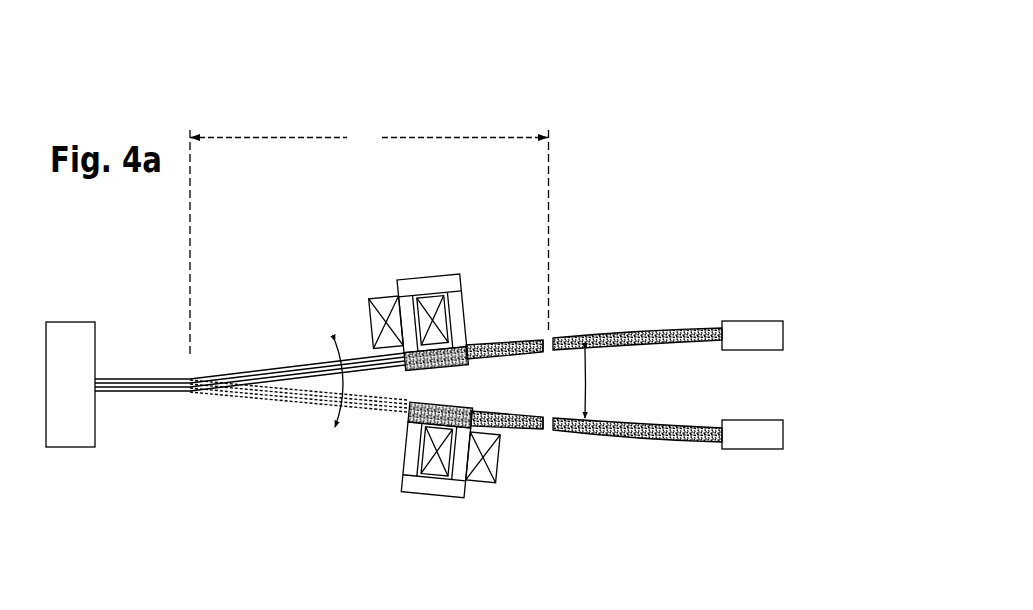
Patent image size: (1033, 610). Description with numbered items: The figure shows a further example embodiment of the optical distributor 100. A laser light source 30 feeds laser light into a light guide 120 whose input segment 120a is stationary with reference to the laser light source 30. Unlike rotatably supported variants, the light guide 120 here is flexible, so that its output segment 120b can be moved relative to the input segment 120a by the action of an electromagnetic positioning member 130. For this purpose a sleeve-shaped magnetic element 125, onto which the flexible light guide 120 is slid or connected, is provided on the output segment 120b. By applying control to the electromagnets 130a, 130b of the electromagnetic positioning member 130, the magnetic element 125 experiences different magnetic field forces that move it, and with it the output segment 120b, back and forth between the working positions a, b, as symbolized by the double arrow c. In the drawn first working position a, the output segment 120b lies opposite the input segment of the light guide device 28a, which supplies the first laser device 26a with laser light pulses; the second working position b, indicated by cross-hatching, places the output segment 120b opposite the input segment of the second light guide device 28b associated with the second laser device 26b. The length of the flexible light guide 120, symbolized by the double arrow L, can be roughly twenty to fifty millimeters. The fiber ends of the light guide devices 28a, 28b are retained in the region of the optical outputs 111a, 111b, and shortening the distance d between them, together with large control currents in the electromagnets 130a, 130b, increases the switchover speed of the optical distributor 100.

The optical distributor 100 is at (513, 95).
The length of the flexible light guide L is at (369, 238).
The laser light source 30 is at (72, 447).
The light guide 120 is at (251, 417).
The input segment 120a is at (145, 379).
The output segment 120b is at (257, 370).
The electromagnetic positioning member 130 is at (465, 270).
The electromagnet 130a is at (402, 273).
The electromagnet 130b is at (398, 508).
The magnetic element 125 is at (473, 337).
The optical output 111a is at (554, 323).
The optical output 111b is at (545, 442).
The light guide device 28a is at (595, 336).
The second light guide device 28b is at (596, 433).
The first laser device 26a is at (758, 321).
The second laser device 26b is at (758, 420).
The first working position a is at (330, 314).
The second working position b is at (331, 444).
The double arrow c is at (343, 383).
The distance d is at (587, 384).